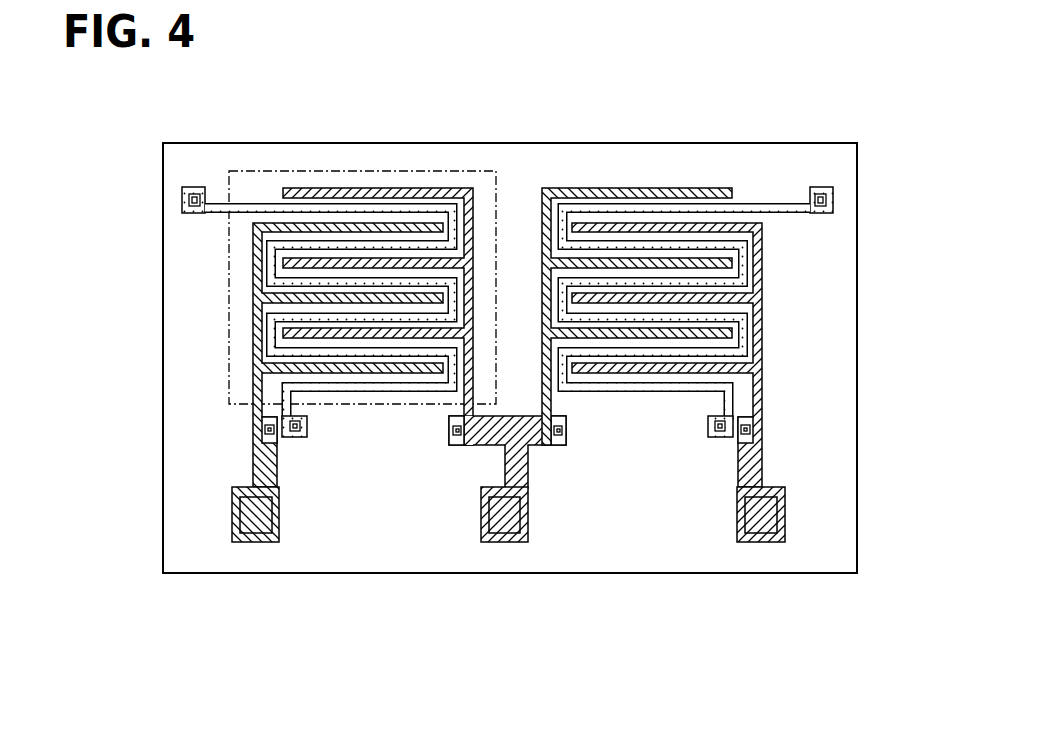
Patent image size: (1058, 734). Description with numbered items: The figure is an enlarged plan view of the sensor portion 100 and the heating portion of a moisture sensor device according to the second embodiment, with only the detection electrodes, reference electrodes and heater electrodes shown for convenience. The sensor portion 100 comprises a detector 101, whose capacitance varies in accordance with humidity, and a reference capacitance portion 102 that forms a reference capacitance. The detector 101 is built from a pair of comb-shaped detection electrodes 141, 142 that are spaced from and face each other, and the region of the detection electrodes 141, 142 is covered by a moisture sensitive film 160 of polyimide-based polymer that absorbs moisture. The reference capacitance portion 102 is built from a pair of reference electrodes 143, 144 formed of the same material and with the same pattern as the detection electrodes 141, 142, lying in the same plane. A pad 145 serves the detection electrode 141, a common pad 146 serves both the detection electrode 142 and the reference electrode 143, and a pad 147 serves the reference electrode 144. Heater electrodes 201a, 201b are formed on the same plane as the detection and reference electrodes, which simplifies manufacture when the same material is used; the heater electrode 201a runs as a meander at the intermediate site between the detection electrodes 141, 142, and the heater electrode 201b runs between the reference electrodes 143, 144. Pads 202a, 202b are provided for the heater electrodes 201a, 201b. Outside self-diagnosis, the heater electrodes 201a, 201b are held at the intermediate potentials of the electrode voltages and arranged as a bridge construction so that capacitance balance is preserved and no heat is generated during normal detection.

The sensor portion 100 is at (863, 131).
The detector 101 is at (398, 133).
The reference capacitance portion 102 is at (691, 138).
The detection electrode 141 is at (270, 428).
The detection electrode 142 is at (424, 359).
The reference electrode 143 is at (612, 188).
The reference electrode 144 is at (747, 428).
The pad 145 is at (253, 523).
The common pad 146 is at (507, 523).
The pad 147 is at (770, 523).
The moisture sensitive film 160 is at (470, 171).
The heater electrode 201a is at (375, 395).
The heater electrode 201b is at (648, 388).
The pad 202a is at (193, 187).
The pad 202b is at (833, 194).